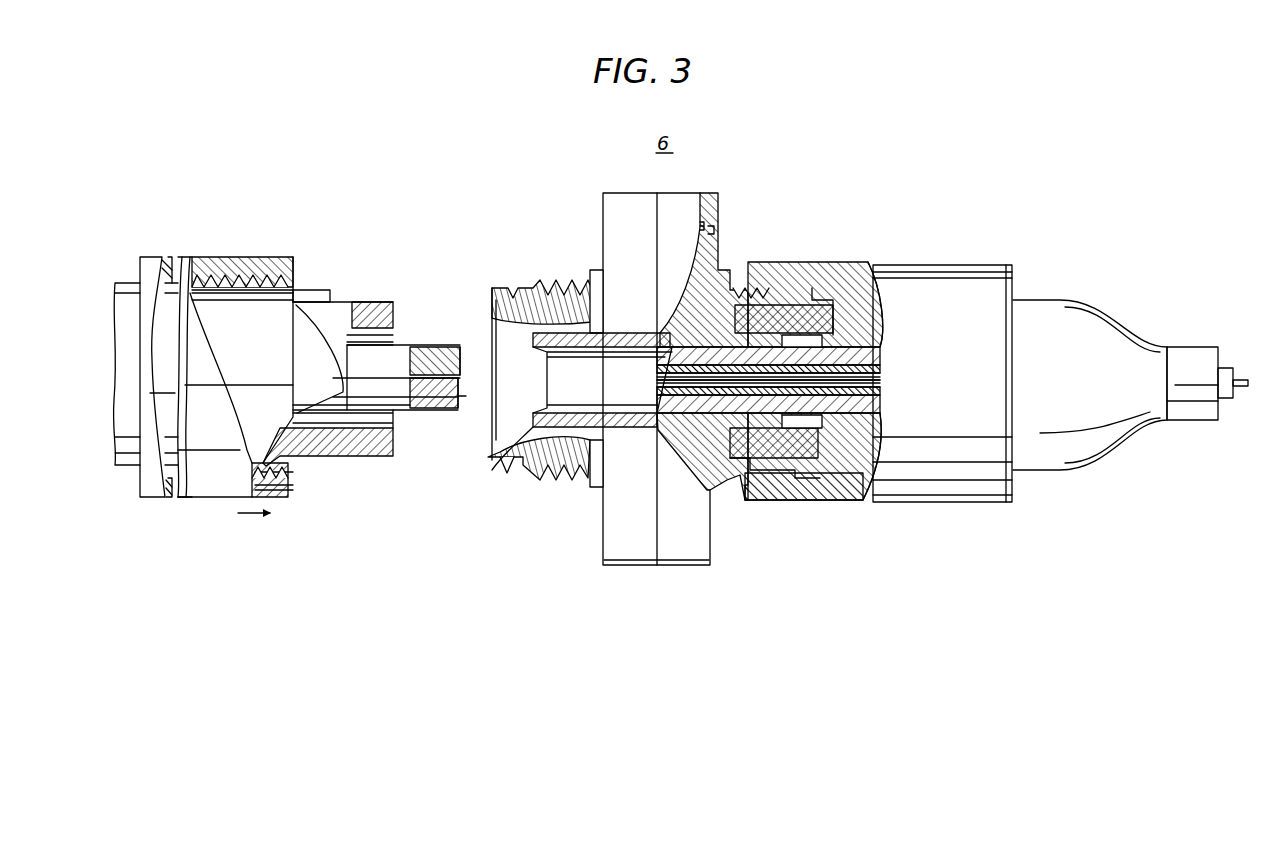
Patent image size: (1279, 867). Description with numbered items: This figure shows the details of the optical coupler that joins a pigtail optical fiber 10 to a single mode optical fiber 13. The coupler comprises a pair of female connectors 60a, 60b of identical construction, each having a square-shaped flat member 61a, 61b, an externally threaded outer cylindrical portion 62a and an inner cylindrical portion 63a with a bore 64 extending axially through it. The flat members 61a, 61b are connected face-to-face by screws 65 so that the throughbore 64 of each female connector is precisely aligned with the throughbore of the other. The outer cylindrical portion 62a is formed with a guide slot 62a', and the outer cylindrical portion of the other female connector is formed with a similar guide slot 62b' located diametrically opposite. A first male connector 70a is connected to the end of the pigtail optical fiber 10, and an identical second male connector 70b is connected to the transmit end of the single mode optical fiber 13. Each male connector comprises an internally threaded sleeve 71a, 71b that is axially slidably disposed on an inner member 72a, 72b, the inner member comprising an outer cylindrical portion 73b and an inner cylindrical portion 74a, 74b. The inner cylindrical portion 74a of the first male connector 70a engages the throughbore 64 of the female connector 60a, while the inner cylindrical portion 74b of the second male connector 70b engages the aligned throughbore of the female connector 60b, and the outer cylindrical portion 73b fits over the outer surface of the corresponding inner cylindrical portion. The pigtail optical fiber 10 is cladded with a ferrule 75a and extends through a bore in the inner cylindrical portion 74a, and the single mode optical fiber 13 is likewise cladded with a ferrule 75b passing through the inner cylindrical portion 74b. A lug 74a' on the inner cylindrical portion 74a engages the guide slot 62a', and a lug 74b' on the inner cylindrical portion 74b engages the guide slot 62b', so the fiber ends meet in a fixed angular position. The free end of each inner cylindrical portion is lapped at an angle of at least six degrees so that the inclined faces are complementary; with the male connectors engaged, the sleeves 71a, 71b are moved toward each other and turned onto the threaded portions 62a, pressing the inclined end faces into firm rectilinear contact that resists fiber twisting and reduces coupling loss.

The pigtail optical fiber 10 is at (460, 364).
The single mode optical fiber 13 is at (881, 383).
The female connector 60a is at (595, 189).
The female connector 60b is at (722, 192).
The flat member 61a is at (624, 566).
The flat member 61b is at (687, 566).
The outer cylindrical portion 62a is at (545, 488).
The guide slot 62a' is at (547, 282).
The guide slot 62b' is at (776, 486).
The inner cylindrical portion 63a is at (497, 478).
The bore 64 is at (566, 412).
The screws 65 is at (712, 228).
The first male connector 70a is at (228, 218).
The second male connector 70b is at (888, 224).
The sleeve 71a is at (258, 257).
The sleeve 71b is at (942, 265).
The inner member 72a is at (282, 458).
The inner member 72b is at (851, 500).
The outer cylindrical portion 73b is at (773, 304).
The inner cylindrical portion 74a is at (376, 352).
The lug 74a' is at (343, 332).
The inner cylindrical portion 74b is at (819, 281).
The lug 74b' is at (774, 511).
The ferrule 75a is at (460, 404).
The ferrule 75b is at (882, 370).